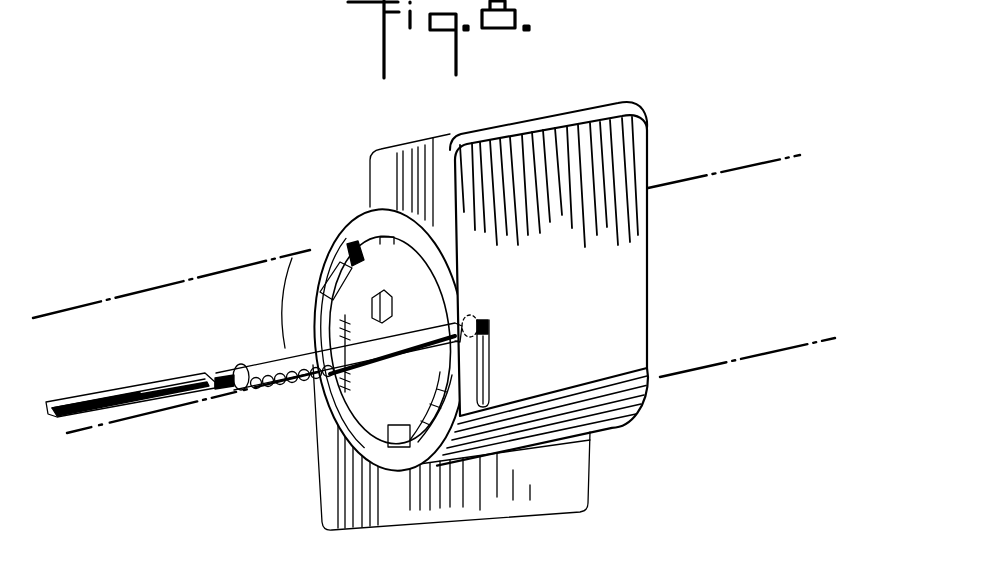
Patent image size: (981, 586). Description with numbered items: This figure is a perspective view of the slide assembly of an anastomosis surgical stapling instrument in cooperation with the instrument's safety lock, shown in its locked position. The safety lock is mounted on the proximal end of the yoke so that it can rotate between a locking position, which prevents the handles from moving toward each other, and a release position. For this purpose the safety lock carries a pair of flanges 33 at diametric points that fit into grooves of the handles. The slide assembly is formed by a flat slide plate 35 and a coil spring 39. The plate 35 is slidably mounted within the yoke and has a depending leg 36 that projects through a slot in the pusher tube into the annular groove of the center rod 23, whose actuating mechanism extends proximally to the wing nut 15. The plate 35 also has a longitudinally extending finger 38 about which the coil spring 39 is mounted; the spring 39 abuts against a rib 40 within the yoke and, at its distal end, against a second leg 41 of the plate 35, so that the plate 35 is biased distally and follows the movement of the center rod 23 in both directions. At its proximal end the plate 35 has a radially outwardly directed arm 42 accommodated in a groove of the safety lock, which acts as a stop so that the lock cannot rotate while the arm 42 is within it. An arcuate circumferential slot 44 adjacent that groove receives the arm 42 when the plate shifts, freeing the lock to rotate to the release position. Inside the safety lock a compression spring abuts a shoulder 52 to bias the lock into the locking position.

The wing nut 15 is at (759, 185).
The center rod 23 is at (180, 287).
The flanges 33 is at (438, 175).
The slide plate 35 is at (137, 393).
The depending leg 36 is at (394, 316).
The finger 38 is at (301, 378).
The coil spring 39 is at (250, 389).
The rib 40 is at (343, 372).
The second leg 41 is at (225, 388).
The arm 42 is at (494, 332).
The arcuate circumferential slot 44 is at (487, 368).
The shoulder 52 is at (338, 262).